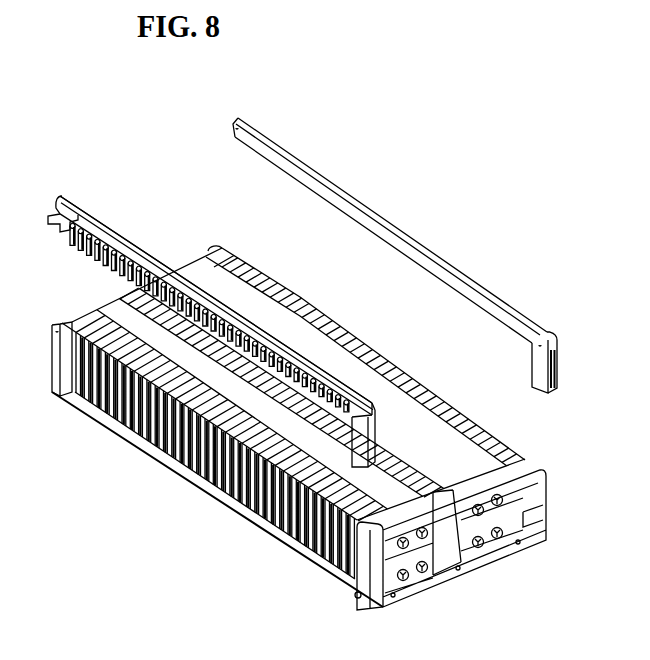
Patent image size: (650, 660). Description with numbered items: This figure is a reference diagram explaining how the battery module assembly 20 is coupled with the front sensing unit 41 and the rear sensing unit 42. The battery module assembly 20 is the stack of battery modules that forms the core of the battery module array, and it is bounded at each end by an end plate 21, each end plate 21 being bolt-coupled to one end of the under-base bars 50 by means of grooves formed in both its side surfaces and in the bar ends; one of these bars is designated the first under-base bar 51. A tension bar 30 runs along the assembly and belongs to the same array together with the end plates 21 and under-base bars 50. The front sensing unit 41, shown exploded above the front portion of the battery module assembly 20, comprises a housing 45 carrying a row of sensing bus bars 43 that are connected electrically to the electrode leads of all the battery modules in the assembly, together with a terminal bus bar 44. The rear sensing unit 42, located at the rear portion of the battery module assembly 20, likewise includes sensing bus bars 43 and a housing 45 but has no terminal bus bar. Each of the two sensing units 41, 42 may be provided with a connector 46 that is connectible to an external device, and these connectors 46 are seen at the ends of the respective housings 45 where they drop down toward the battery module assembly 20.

The battery module assembly 20 is at (376, 347).
The end plate 21 is at (60, 321).
The tension bar 30 is at (117, 307).
The front sensing unit 41 is at (60, 196).
The rear sensing unit 42 is at (238, 118).
The sensing bus bar 43 is at (98, 255).
The terminal bus bar 44 is at (52, 216).
The housing 45 is at (137, 240).
The connector 46 is at (378, 436).
The under-base bar 50 is at (217, 499).
The first under-base bar 51 is at (197, 500).